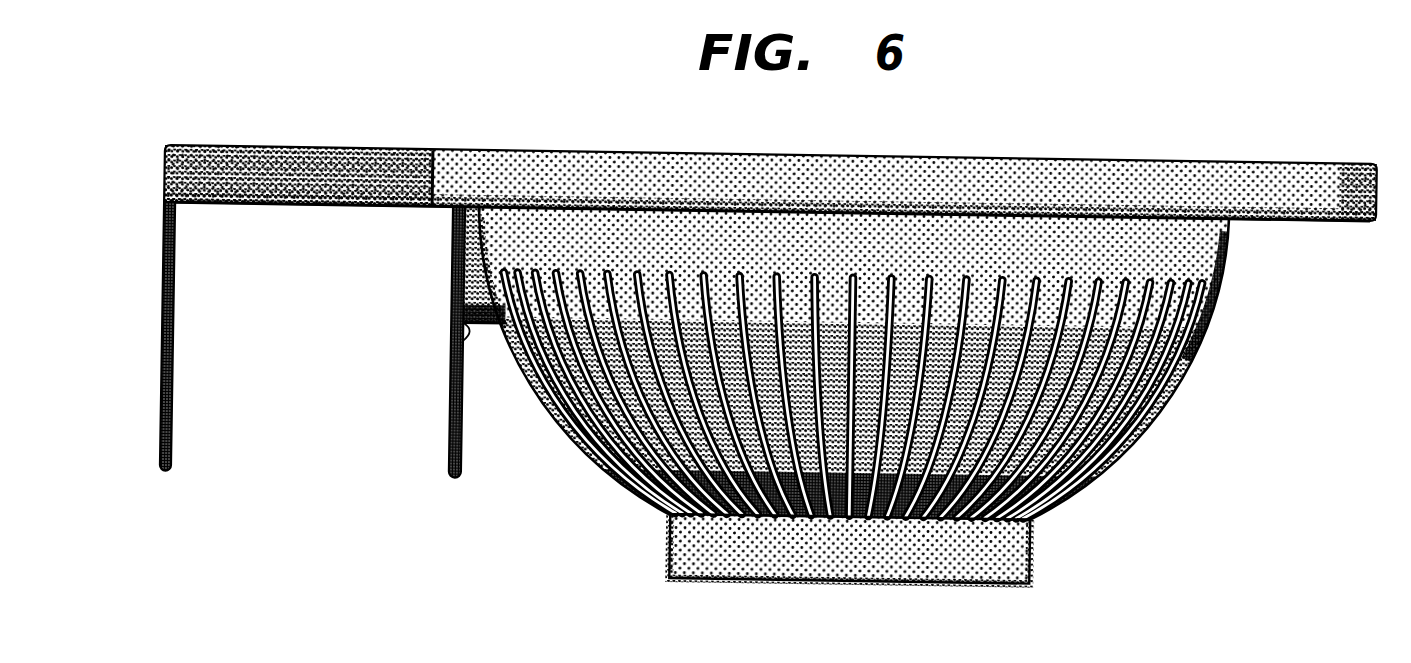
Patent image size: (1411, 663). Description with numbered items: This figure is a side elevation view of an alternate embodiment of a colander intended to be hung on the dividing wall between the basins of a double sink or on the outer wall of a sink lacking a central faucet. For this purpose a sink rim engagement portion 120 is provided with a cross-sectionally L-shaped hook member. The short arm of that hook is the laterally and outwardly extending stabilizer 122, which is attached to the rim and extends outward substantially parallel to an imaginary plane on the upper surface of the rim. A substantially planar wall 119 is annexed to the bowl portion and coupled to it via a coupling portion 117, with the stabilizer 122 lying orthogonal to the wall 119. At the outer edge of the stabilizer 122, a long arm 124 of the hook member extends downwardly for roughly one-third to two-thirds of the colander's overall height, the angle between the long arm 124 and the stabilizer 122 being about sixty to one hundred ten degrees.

The sink rim engagement portion 120 is at (717, 309).
The stabilizer 122 is at (297, 152).
The long arm 124 is at (160, 440).
The wall 119 is at (452, 462).
The coupling portion 117 is at (494, 327).